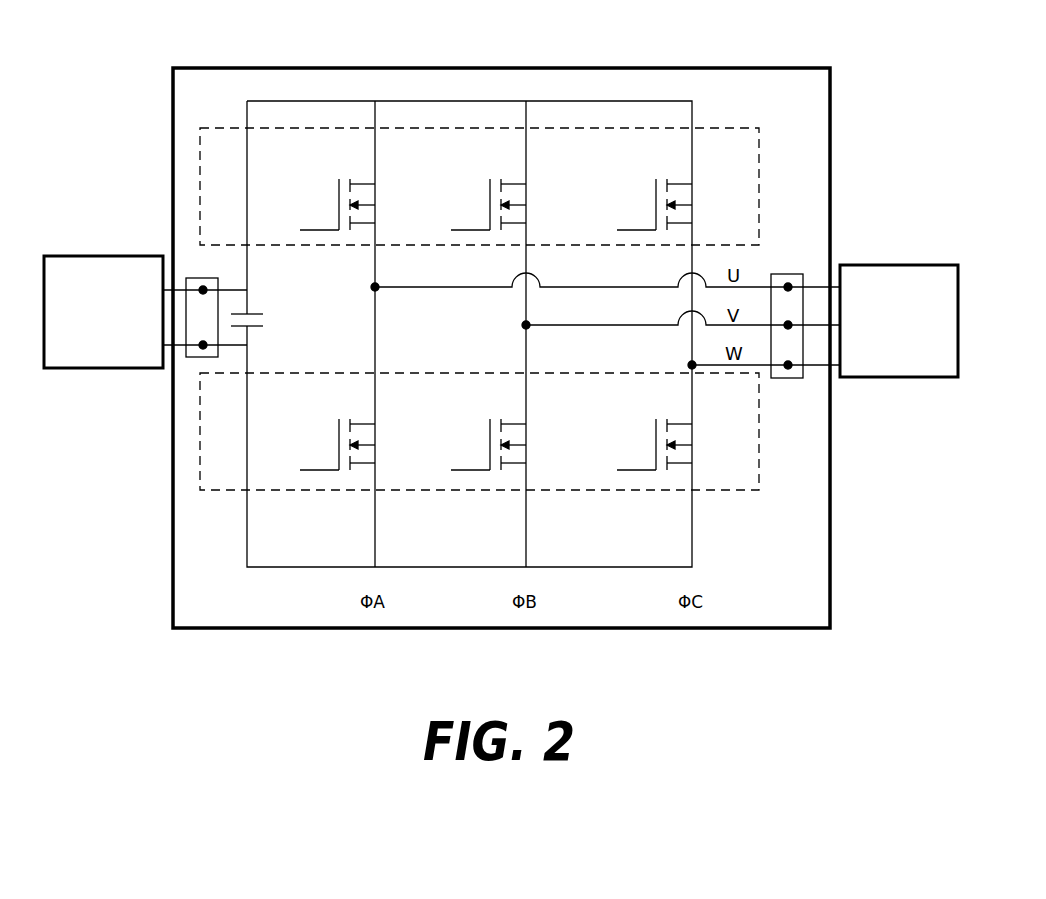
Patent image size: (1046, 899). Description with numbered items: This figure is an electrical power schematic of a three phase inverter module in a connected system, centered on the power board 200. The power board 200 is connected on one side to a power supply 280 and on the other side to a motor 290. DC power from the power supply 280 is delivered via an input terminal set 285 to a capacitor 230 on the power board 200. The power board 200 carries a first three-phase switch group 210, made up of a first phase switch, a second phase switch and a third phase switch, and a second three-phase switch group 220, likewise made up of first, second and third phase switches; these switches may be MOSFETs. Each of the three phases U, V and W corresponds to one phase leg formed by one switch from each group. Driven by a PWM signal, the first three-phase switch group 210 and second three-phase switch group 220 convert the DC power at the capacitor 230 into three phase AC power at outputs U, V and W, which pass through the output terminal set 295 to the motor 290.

The power board 200 is at (508, 68).
The first three-phase switch group 210 is at (421, 127).
The second three-phase switch group 220 is at (437, 373).
The capacitor 230 is at (266, 319).
The power supply 280 is at (85, 256).
The input terminal set 285 is at (218, 279).
The motor 290 is at (880, 265).
The output terminal set 295 is at (778, 274).